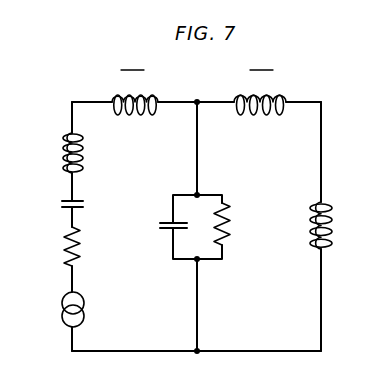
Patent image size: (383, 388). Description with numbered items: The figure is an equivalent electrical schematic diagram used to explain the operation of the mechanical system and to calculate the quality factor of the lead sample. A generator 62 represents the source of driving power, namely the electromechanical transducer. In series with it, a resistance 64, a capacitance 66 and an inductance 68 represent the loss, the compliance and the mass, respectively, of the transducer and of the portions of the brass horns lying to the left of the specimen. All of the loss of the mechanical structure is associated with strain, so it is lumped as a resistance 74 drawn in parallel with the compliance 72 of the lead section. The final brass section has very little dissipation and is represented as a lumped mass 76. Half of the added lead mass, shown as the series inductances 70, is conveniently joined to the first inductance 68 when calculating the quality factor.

The generator F 62 is at (64, 318).
The resistance R1 64 is at (64, 251).
The capacitance C1 66 is at (62, 203).
The inductance M1 68 is at (62, 153).
The load inductance ML/2 70 is at (158, 98).
The compliance CL 72 is at (172, 233).
The resistance RL 74 is at (228, 246).
The lumped mass M2 76 is at (330, 210).